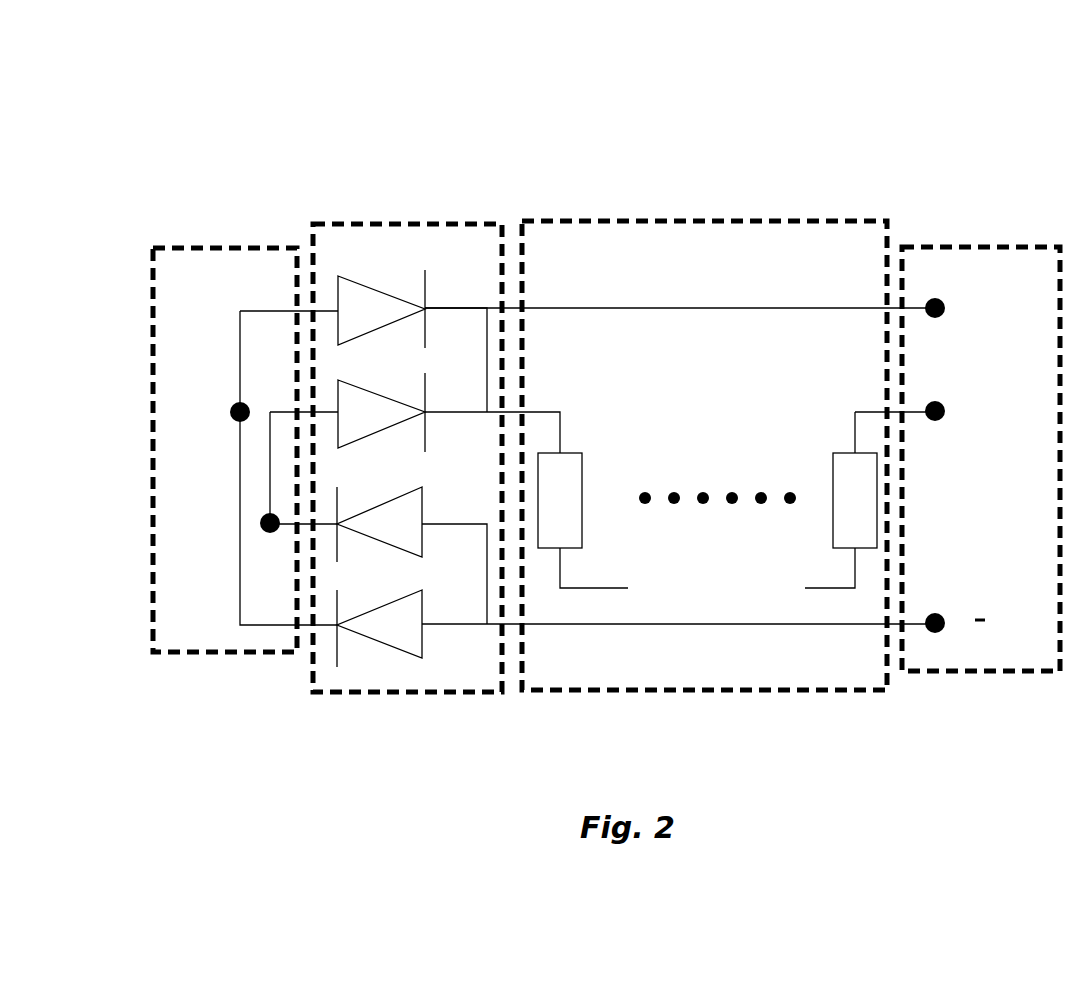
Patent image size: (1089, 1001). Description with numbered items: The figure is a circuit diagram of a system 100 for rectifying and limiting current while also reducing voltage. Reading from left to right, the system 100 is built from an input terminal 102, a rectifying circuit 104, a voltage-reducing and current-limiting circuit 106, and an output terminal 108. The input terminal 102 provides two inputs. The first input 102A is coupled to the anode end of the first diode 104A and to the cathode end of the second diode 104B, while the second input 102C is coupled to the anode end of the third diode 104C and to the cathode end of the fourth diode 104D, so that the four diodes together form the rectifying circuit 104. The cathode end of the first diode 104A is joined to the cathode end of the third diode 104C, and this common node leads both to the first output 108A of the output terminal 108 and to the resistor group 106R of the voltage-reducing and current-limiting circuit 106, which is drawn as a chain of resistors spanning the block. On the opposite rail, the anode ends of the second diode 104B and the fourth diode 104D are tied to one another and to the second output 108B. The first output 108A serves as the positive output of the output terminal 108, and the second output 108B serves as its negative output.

The system 100 is at (270, 110).
The input terminal 102 is at (195, 248).
The first input 102A is at (232, 418).
The second input 102C is at (262, 528).
The rectifying circuit 104 is at (395, 224).
The first diode 104A is at (398, 319).
The second diode 104B is at (418, 637).
The third diode 104C is at (398, 423).
The fourth diode 104D is at (418, 536).
The voltage-reducing and current-limiting circuit 106 is at (692, 221).
The resistor group 106R is at (590, 588).
The output terminal 108 is at (977, 247).
The first output 108A is at (922, 297).
The second output 108B is at (930, 632).